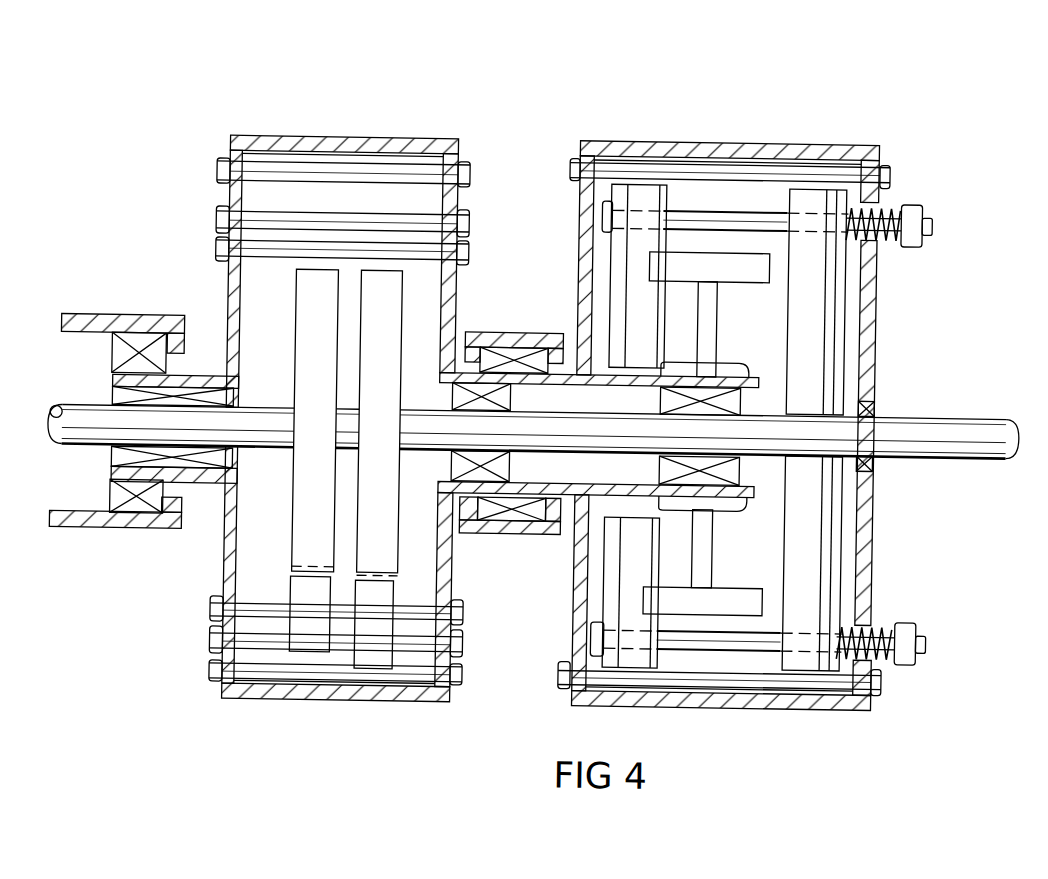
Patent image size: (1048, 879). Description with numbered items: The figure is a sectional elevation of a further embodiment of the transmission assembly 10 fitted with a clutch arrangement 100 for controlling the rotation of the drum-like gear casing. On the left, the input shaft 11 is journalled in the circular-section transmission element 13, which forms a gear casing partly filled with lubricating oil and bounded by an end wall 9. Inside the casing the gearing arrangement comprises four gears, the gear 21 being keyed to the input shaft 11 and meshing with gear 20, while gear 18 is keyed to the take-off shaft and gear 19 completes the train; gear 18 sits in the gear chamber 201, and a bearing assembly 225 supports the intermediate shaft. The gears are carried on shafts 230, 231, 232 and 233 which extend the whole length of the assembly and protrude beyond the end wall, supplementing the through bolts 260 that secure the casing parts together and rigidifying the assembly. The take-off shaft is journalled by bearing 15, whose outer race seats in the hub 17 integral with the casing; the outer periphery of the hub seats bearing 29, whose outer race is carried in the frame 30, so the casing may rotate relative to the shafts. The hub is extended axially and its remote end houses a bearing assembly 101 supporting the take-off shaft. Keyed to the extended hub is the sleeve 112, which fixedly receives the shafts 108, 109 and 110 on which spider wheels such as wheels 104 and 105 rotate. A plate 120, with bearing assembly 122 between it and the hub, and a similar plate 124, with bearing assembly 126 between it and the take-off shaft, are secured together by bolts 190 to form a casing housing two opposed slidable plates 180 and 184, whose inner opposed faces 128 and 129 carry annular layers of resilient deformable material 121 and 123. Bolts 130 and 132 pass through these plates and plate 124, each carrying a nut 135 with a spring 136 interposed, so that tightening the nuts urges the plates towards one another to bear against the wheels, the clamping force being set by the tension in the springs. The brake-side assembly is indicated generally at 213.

The end wall 9 is at (226, 332).
The transmission assembly 10 is at (299, 704).
The input shaft 11 is at (105, 427).
The transmission element 13 is at (225, 142).
The bearing 15 is at (452, 401).
The sleeve or hub 17 is at (490, 539).
The gear 18 is at (380, 423).
The gear 19 is at (363, 643).
The gear 20 is at (311, 624).
The gear 21 is at (315, 420).
The bearing 29 is at (523, 333).
The frame 30 is at (516, 540).
The clutch arrangement 100 is at (888, 532).
The bearing assembly 101 is at (723, 506).
The wheel 104 is at (709, 269).
The wheel 105 is at (702, 603).
The shaft 108 is at (706, 299).
The shaft 109 is at (704, 559).
The shaft 110 is at (715, 429).
The sleeve 112 is at (722, 367).
The plate 120 is at (576, 191).
The resilient deformable material 121 is at (641, 196).
The bearing assembly 122 is at (576, 329).
The resilient deformable material 123 is at (784, 238).
The plate 124 is at (874, 352).
The bearing assembly 126 is at (875, 404).
The inner opposed face 128 is at (624, 191).
The inner opposed face 129 is at (823, 188).
The bolt 130 is at (750, 216).
The bolt 132 is at (738, 637).
The nut 135 is at (910, 197).
The spring 136 is at (884, 202).
The plate 180 is at (611, 609).
The plate 184 is at (843, 289).
The bolt 190 is at (707, 682).
The gear chamber 201 is at (379, 199).
The brake assembly 213 is at (293, 114).
The bearing assembly 225 is at (144, 438).
The shaft 230 is at (223, 652).
The shaft 231 is at (260, 611).
The shaft 232 is at (410, 229).
The shaft 233 is at (287, 251).
The through bolt 260 is at (393, 175).